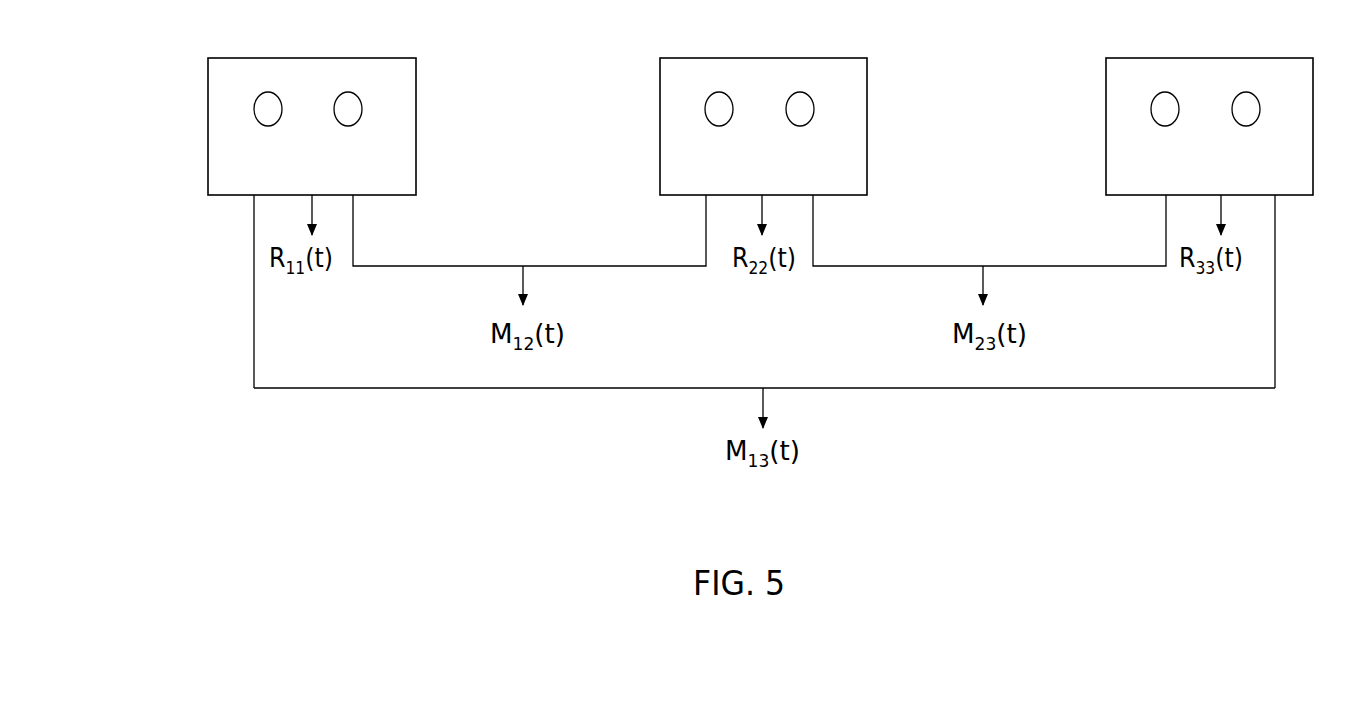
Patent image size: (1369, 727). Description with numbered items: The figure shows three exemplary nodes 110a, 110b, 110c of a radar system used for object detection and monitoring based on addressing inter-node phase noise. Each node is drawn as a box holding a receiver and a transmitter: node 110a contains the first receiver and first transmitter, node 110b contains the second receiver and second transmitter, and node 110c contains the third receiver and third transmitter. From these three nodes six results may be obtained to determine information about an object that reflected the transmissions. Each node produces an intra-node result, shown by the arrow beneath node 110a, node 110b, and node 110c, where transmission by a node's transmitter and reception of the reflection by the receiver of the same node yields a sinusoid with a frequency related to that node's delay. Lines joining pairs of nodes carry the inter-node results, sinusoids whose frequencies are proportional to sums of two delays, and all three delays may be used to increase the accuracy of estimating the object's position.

The node 110a is at (236, 197).
The node 110b is at (679, 197).
The node 110c is at (1114, 197).